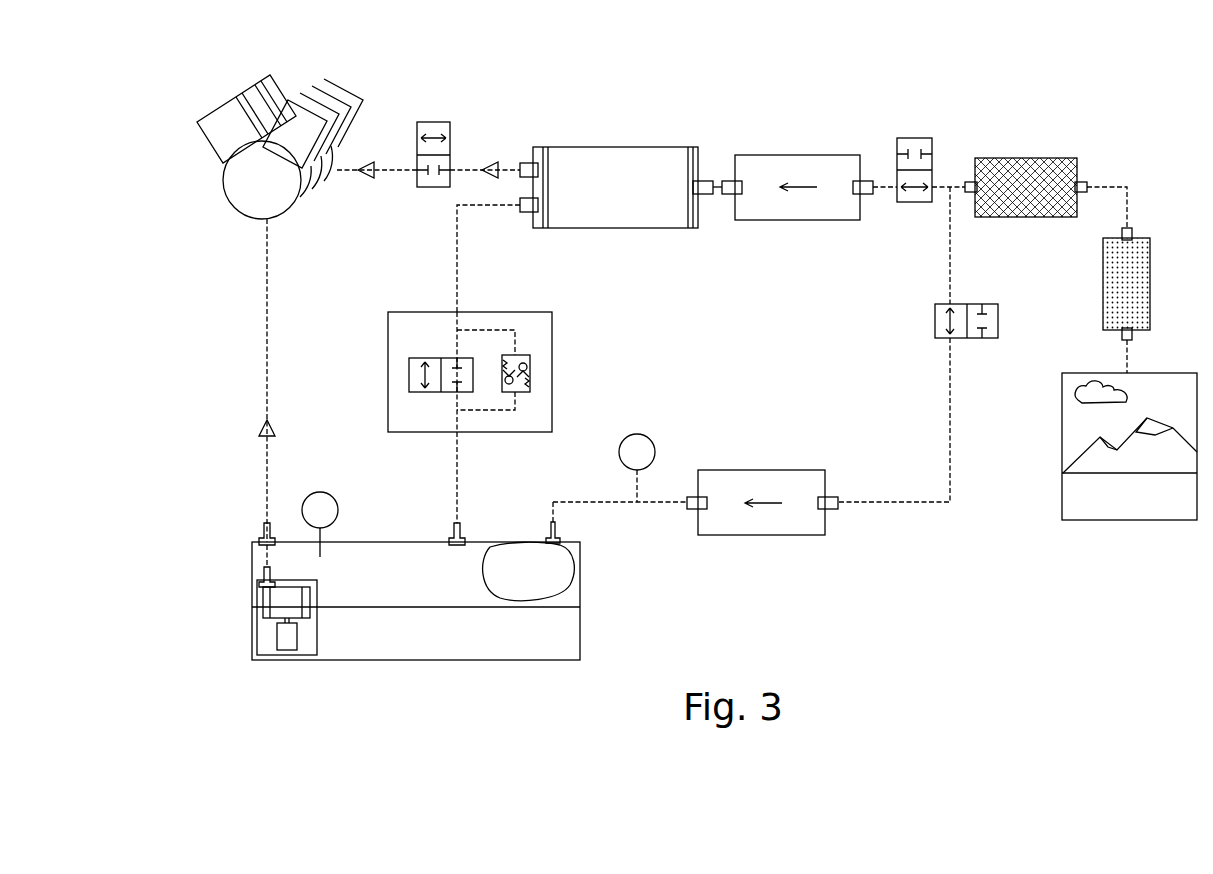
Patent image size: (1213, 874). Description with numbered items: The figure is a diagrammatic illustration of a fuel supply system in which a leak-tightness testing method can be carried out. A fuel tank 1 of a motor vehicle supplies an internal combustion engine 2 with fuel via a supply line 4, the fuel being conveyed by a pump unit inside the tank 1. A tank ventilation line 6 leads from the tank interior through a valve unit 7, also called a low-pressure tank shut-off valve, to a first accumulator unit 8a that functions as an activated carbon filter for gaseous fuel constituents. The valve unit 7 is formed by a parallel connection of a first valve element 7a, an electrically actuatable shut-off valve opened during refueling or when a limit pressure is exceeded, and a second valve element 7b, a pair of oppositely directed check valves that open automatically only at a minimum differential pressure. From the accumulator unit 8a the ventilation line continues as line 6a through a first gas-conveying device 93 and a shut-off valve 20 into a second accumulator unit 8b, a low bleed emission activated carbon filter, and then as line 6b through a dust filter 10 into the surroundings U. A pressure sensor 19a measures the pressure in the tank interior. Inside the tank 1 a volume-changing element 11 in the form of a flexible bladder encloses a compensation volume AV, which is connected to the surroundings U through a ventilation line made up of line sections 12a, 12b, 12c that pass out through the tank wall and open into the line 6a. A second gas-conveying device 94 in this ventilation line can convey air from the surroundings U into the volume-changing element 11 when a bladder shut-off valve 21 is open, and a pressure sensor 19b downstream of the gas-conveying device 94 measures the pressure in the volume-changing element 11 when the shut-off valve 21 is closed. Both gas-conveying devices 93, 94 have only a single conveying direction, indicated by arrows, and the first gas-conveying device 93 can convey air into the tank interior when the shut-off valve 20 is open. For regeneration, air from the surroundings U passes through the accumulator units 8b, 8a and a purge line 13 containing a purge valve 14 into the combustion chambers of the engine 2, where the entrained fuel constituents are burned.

The tank 1 is at (385, 540).
The internal combustion engine 2 is at (260, 178).
The supply line 4 is at (267, 340).
The tank ventilation line 6 is at (458, 480).
The line 6a is at (715, 182).
The line 6b is at (1127, 186).
The valve unit 7 is at (466, 330).
The first valve element 7a is at (409, 373).
The second valve element 7b is at (530, 357).
The first accumulator unit 8a is at (615, 205).
The second accumulator unit 8b is at (1027, 205).
The dust filter 10 is at (1135, 270).
The volume-changing element 11 is at (500, 537).
The ventilation line section 12a is at (610, 504).
The ventilation line section 12b is at (883, 503).
The ventilation line section 12c is at (950, 273).
The purge line 13 is at (465, 166).
The purge valve 14 is at (433, 122).
The pressure sensor 19a is at (321, 492).
The pressure sensor 19b is at (637, 434).
The shut-off valve 20 is at (913, 203).
The bladder shut-off valve 21 is at (935, 320).
The first gas-conveying device 93 is at (800, 214).
The second gas-conveying device 94 is at (760, 528).
The compensation volume AV is at (545, 582).
The surroundings U is at (1128, 522).